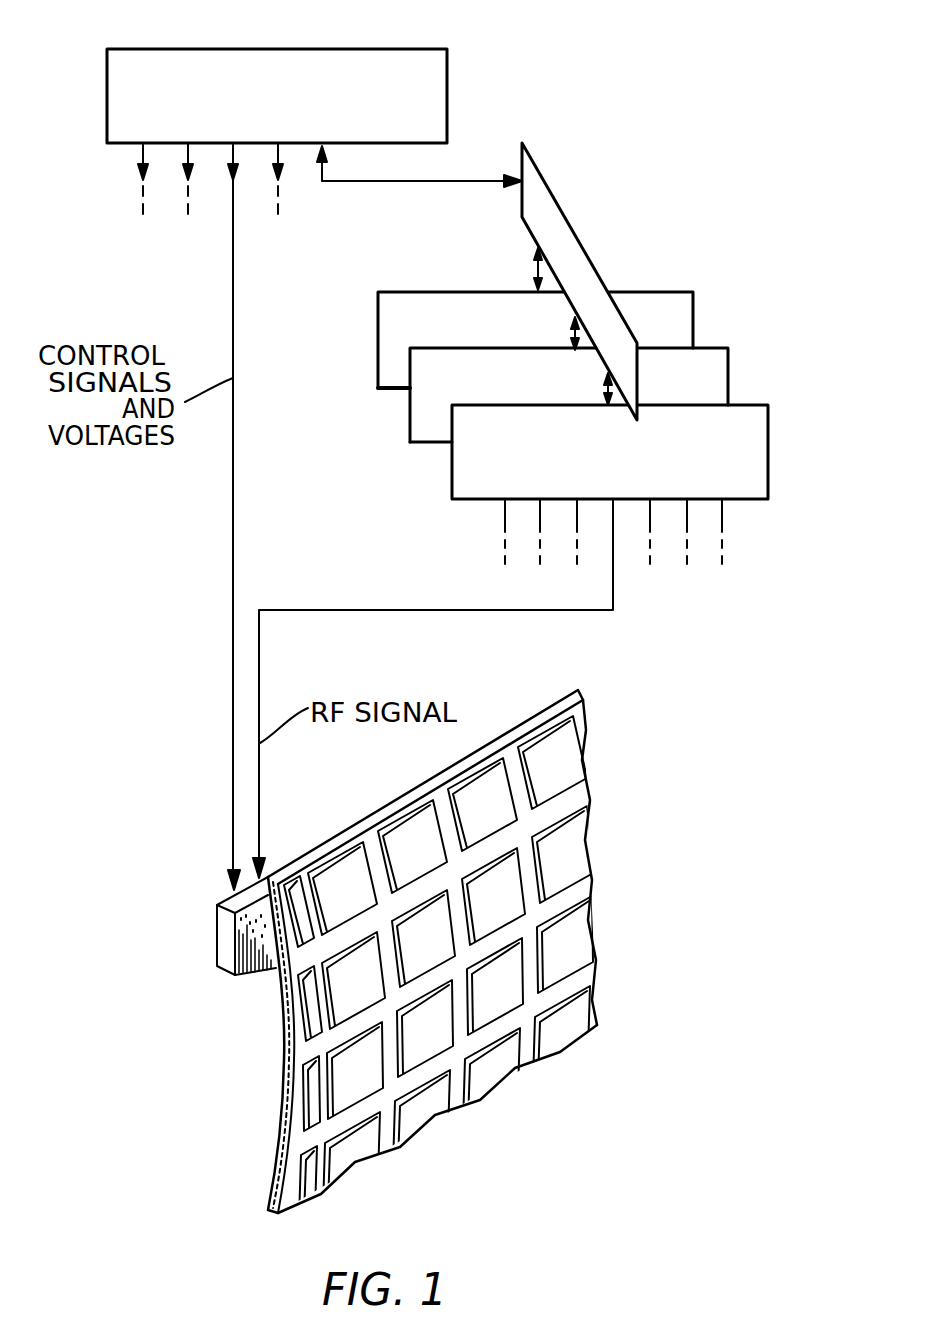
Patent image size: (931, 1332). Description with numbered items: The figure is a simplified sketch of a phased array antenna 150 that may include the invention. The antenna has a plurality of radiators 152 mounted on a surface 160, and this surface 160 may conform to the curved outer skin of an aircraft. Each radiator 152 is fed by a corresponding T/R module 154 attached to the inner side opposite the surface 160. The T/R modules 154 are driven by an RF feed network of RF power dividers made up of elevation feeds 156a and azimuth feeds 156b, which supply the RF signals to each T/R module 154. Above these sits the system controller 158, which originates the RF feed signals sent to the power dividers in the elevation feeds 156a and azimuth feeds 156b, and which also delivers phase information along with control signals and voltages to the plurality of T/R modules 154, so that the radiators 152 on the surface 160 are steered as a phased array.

The phased array antenna 150 is at (183, 896).
The radiator 152 is at (350, 988).
The T/R module 154 is at (225, 928).
The elevation feed 156a is at (452, 477).
The azimuth feed 156b is at (632, 281).
The system controller 158 is at (267, 49).
The surface 160 is at (300, 1060).